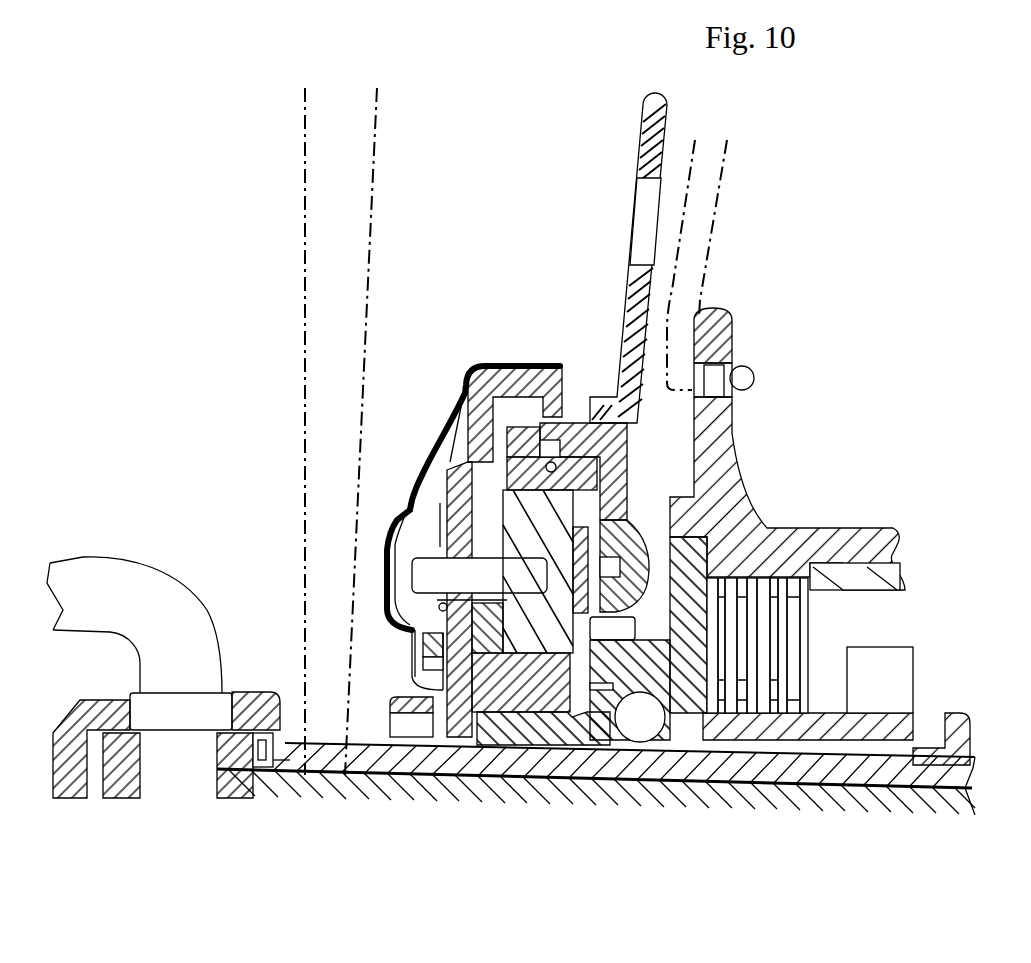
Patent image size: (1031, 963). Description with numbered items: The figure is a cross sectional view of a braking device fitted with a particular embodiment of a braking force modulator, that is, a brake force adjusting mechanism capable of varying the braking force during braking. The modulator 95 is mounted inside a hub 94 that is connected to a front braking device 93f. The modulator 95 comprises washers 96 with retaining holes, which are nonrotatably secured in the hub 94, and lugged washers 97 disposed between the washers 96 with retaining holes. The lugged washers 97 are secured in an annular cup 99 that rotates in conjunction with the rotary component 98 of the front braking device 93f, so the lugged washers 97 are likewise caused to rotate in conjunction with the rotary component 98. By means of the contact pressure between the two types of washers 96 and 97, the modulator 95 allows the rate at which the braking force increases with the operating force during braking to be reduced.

The front braking device 93f is at (510, 334).
The hub 94 is at (870, 530).
The modulator 95 is at (790, 528).
The washers with retaining holes 96 is at (710, 630).
The lugged washers 97 is at (723, 680).
The rotary component 98 is at (575, 423).
The annular cup 99 is at (700, 778).